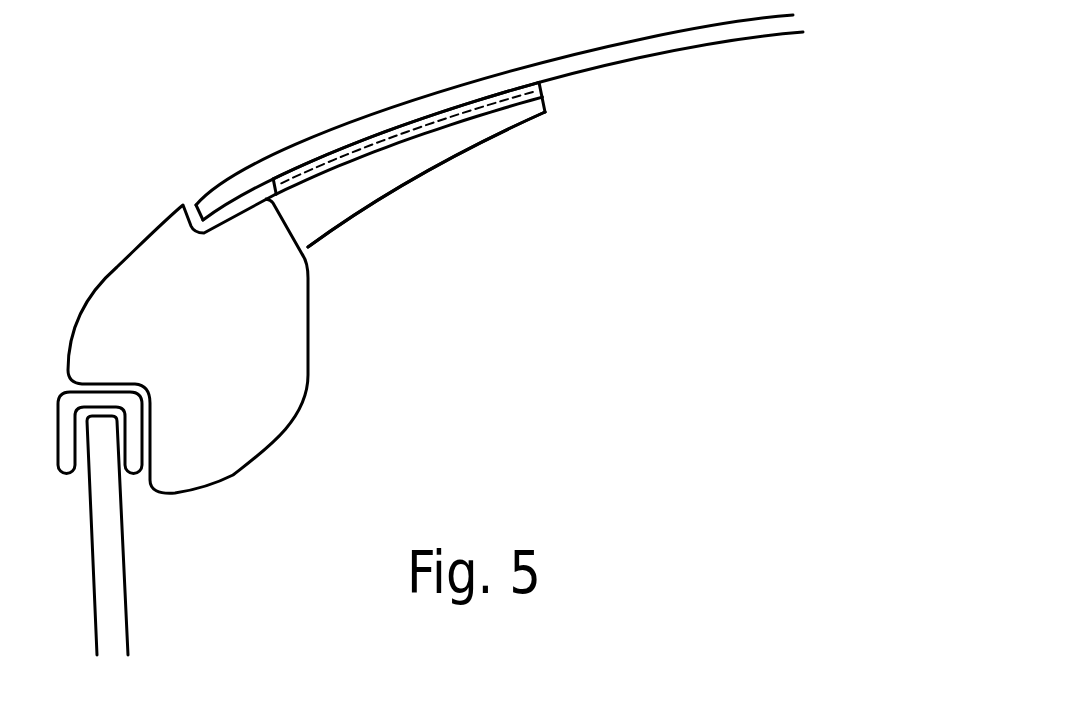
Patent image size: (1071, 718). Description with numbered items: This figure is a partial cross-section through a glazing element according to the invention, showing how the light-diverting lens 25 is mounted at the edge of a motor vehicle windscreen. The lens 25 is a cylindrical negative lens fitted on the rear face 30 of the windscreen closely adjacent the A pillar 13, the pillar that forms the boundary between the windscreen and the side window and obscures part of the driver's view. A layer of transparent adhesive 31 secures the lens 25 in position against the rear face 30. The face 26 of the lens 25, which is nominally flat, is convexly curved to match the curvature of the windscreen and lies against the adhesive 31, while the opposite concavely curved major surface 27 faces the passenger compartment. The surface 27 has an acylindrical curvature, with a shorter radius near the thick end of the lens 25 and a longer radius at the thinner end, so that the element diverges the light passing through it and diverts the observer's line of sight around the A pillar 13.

The A pillar 13 is at (257, 338).
The lens 25 is at (373, 163).
The flat face 26 is at (297, 183).
The concavely curved major surface 27 is at (480, 143).
The rear face 30 is at (615, 62).
The layer of transparent adhesive 31 is at (370, 138).